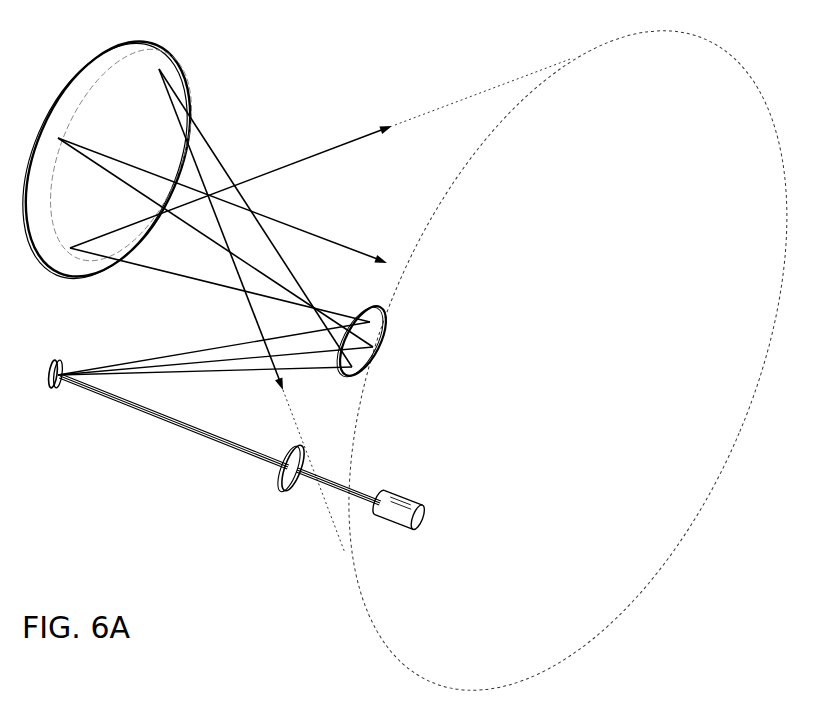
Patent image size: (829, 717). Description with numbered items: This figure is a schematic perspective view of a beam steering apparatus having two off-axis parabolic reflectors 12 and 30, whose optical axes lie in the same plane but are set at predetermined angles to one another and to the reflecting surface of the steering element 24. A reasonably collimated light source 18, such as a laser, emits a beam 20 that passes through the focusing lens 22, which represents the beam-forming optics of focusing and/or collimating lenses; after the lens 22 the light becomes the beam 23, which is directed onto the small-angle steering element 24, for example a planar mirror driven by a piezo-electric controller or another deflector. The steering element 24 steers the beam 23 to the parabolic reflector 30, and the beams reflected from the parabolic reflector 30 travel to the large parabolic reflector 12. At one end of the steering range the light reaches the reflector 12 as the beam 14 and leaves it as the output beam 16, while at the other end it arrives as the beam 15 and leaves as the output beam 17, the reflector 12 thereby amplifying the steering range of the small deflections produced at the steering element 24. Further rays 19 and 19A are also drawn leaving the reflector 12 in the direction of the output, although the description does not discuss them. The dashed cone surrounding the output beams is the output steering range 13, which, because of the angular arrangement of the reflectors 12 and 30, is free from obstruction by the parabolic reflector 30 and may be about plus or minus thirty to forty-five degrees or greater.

The parabolic reflector 12 is at (97, 60).
The output steering range 13 is at (388, 645).
The beam 14 is at (243, 196).
The beam 15 is at (183, 276).
The beam 16 is at (251, 316).
The beam 17 is at (333, 149).
The light source 18 is at (412, 502).
The light ray 19 is at (193, 227).
The reflected light ray 19A is at (360, 251).
The beam 20 is at (355, 490).
The focusing lens 22 is at (296, 492).
The beam 23 is at (237, 449).
The steering element 24 is at (46, 385).
The parabolic reflector 30 is at (388, 349).